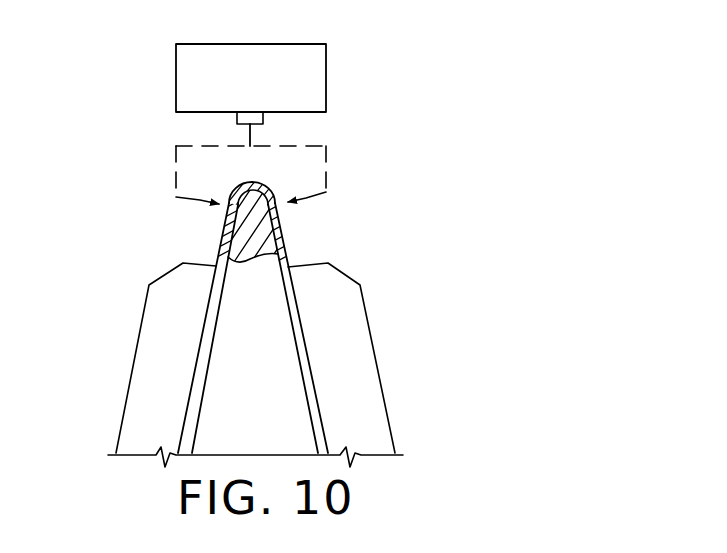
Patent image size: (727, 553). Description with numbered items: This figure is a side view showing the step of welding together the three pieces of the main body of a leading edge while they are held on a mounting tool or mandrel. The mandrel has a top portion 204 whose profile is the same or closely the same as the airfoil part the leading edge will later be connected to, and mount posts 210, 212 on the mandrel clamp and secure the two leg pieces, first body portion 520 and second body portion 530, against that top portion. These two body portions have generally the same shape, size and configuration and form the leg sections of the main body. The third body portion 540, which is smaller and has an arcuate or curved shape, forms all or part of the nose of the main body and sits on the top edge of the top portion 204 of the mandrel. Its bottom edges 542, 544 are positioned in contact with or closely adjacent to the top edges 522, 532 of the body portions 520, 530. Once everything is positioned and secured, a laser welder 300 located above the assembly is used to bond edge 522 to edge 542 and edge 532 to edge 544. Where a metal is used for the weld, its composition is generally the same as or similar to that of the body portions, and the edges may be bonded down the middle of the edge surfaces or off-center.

The laser welder 300 is at (176, 75).
The top portion 204 is at (225, 360).
The mount post 210 is at (358, 320).
The mount post 212 is at (143, 323).
The first body portion 520 is at (283, 258).
The top edge 522 is at (283, 205).
The second body portion 530 is at (217, 260).
The top edge 532 is at (228, 207).
The third body portion 540 is at (277, 193).
The bottom edge 542 is at (280, 198).
The bottom edge 544 is at (232, 200).